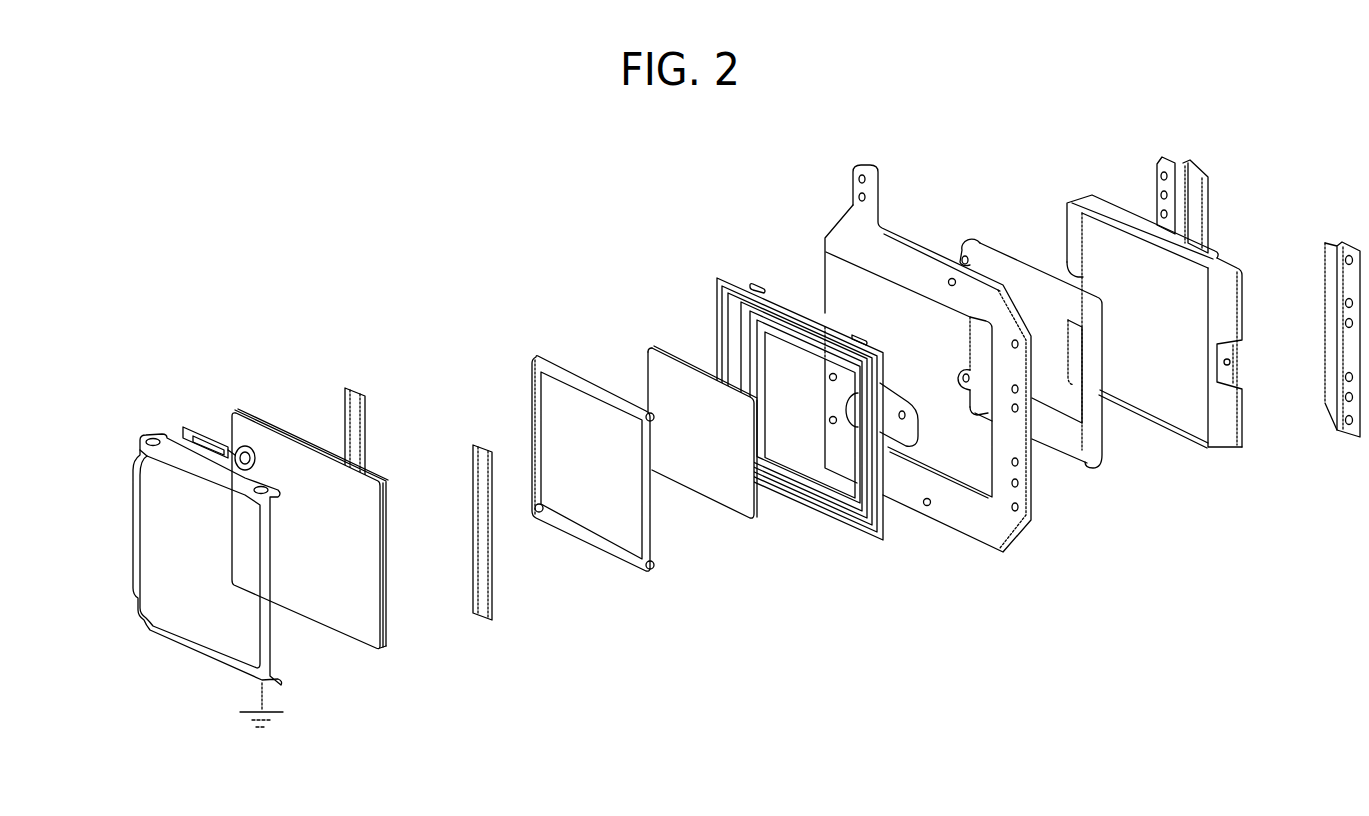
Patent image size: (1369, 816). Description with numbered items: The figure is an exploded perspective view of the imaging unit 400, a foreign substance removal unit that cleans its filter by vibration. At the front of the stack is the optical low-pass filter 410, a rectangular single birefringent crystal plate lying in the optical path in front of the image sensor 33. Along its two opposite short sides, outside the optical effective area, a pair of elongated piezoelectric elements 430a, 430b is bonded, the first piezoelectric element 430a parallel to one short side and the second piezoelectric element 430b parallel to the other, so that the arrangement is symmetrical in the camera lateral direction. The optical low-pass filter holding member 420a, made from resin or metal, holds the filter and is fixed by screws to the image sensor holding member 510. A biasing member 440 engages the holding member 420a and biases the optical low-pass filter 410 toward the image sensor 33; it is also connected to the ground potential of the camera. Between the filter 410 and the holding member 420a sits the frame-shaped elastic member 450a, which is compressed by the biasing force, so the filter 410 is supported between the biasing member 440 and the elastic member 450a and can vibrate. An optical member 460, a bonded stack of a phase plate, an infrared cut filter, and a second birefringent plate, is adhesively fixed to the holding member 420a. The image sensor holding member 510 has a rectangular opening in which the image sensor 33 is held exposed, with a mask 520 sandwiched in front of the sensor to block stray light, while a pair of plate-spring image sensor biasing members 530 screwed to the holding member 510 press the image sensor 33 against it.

The imaging unit 400 is at (231, 232).
The image sensor 33 is at (1193, 420).
The optical low-pass filter 410 is at (351, 628).
The optical low-pass filter holding member 420a is at (738, 278).
The piezoelectric element 430a is at (352, 388).
The piezoelectric element 430b is at (488, 612).
The biasing member 440 is at (209, 656).
The elastic member 450a is at (553, 362).
The optical member 460 is at (740, 515).
The image sensor holding member 510 is at (975, 535).
The mask 520 is at (999, 256).
The image sensor biasing members 530 is at (1200, 172).